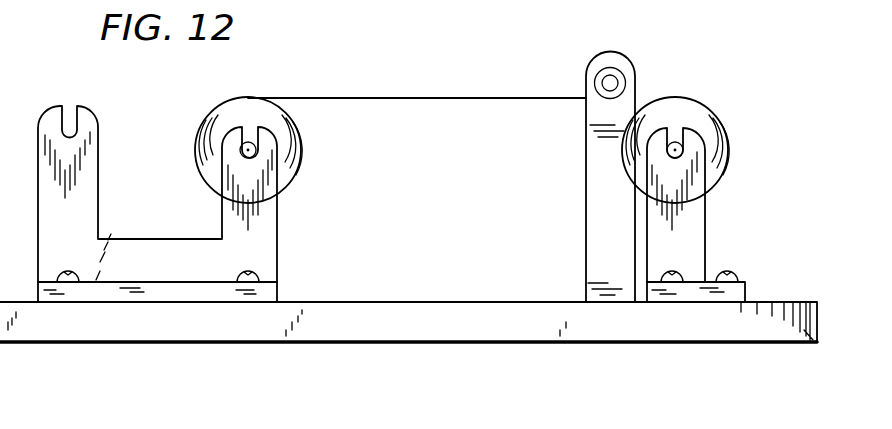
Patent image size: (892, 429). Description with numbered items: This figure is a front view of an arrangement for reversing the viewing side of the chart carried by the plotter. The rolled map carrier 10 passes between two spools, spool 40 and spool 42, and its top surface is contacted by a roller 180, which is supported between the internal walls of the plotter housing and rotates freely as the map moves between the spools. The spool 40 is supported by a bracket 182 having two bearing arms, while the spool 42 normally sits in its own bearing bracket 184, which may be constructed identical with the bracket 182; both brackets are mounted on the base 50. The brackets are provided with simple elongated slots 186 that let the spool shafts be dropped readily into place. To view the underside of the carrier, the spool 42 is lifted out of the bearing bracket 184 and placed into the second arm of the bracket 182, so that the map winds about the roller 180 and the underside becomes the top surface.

The tape 10 is at (444, 96).
The spool 40 is at (296, 168).
The spool 42 is at (728, 152).
The base plate 50 is at (816, 344).
The roller 180 is at (621, 73).
The bracket 182 is at (272, 249).
The bearing bracket 184 is at (693, 231).
The elongated slots 186 is at (243, 153).